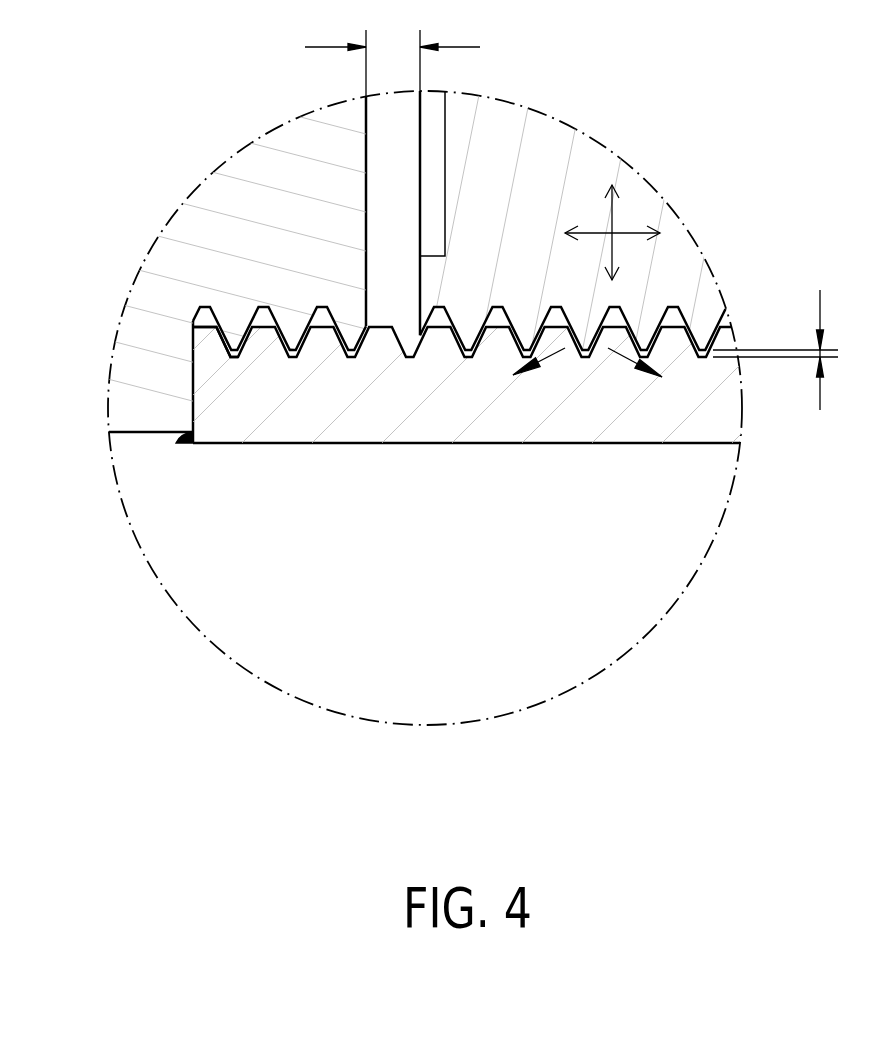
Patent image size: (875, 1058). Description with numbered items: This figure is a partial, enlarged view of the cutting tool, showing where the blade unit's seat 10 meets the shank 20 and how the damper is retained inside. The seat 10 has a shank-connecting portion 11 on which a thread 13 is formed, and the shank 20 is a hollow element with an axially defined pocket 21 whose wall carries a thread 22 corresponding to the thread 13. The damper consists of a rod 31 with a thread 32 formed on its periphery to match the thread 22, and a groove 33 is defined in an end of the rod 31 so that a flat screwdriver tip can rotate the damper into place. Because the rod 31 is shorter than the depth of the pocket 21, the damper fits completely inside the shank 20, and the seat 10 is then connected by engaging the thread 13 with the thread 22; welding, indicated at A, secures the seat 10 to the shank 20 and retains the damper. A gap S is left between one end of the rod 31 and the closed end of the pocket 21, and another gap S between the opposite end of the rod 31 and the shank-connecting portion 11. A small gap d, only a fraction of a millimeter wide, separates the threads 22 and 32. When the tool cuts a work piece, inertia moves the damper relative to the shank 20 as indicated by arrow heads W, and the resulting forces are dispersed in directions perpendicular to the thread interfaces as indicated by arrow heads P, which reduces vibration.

The seat 10 is at (137, 405).
The shank-connecting portion 11 is at (310, 152).
The thread 13 is at (290, 333).
The shank 20 is at (472, 417).
The pocket 21 is at (197, 313).
The thread 22 is at (630, 324).
The rod 31 is at (575, 170).
The thread 32 is at (648, 348).
The groove 33 is at (446, 190).
The gap S is at (392, 53).
The gap d is at (777, 349).
The arrow heads W is at (613, 225).
The arrow heads P is at (563, 350).
The welding A is at (185, 445).